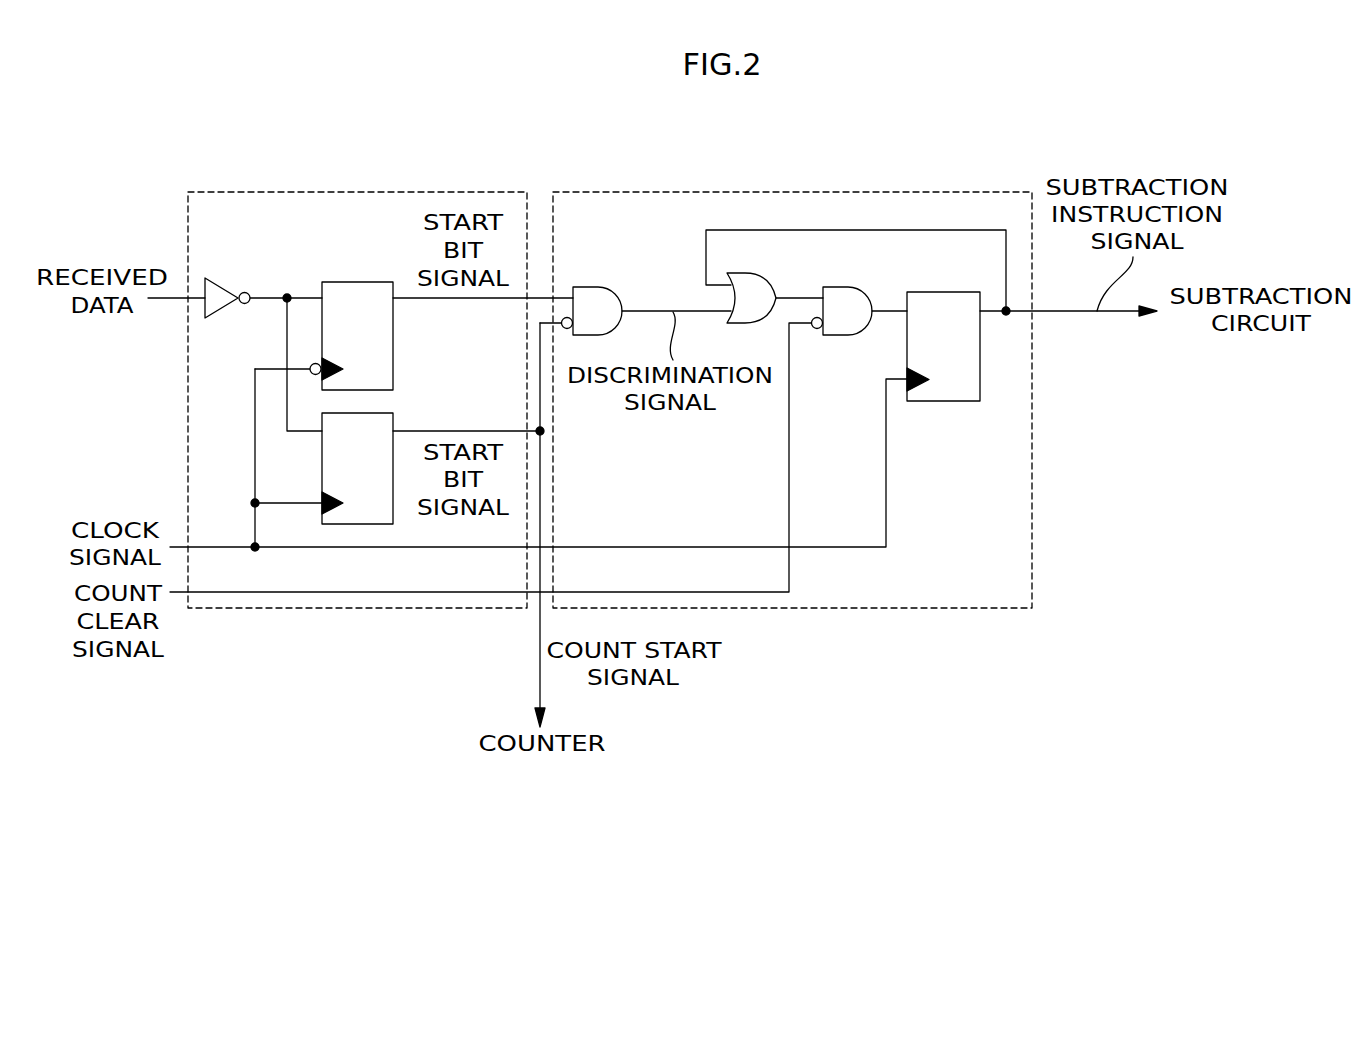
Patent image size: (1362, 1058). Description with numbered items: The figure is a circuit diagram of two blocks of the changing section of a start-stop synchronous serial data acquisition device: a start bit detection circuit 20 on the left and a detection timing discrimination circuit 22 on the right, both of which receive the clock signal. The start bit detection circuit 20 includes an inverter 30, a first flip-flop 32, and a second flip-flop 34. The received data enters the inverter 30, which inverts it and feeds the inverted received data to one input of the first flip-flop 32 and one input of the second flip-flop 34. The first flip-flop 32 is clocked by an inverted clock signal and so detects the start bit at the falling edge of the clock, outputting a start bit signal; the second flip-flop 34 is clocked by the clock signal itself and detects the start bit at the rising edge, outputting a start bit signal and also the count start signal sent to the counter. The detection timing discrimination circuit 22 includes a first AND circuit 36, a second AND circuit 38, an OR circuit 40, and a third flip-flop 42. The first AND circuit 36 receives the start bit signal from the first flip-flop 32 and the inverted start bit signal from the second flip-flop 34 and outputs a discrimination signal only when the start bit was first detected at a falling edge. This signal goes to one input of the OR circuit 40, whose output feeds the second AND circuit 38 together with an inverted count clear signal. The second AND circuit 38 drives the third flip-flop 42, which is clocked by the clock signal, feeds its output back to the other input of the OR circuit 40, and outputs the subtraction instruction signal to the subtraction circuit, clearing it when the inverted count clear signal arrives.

The start bit detection circuit 20 is at (345, 192).
The detection timing discrimination circuit 22 is at (940, 192).
The inverter 30 is at (224, 287).
The first flip-flop 32 is at (360, 282).
The second flip-flop 34 is at (385, 413).
The first AND circuit 36 is at (594, 287).
The second AND circuit 38 is at (842, 287).
The OR circuit 40 is at (764, 280).
The third flip-flop 42 is at (944, 292).